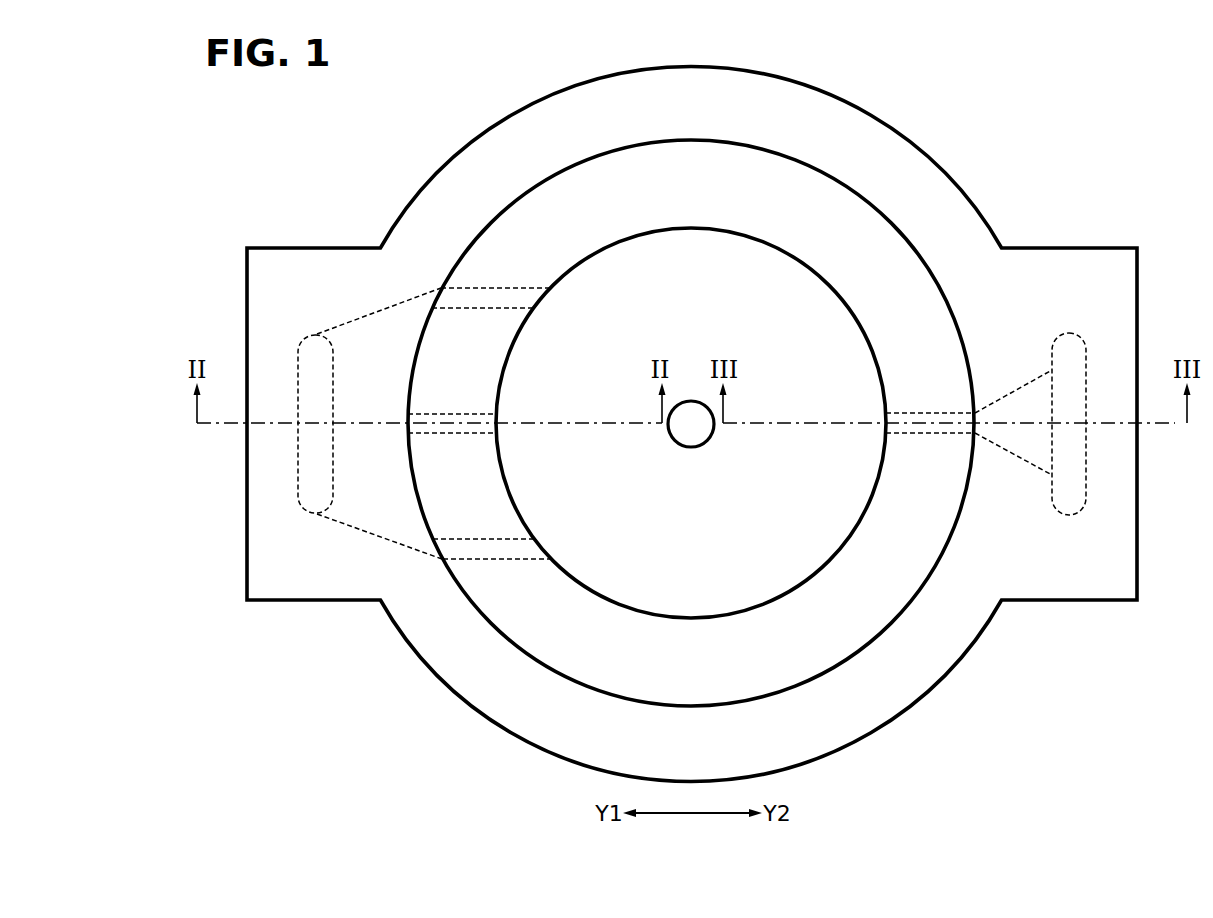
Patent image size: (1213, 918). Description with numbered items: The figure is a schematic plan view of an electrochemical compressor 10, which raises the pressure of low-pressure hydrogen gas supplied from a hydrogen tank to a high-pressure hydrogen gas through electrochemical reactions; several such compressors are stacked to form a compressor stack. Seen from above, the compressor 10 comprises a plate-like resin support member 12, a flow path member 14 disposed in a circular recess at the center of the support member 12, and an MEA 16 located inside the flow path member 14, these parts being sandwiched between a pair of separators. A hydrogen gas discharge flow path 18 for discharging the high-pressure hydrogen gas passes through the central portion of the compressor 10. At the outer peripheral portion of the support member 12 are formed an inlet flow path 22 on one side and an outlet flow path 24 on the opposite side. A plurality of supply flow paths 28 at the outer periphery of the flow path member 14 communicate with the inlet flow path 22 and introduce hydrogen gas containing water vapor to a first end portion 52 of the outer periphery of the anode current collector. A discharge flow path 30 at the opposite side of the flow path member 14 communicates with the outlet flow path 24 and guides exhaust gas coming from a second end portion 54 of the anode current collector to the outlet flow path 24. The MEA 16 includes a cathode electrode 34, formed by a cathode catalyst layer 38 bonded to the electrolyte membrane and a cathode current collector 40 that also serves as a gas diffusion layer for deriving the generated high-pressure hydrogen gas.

The electrochemical compressor 10 is at (285, 121).
The support member 12 is at (462, 144).
The flow path member 14 is at (641, 153).
The MEA 16 is at (585, 248).
The hydrogen gas discharge flow path 18 is at (671, 430).
The inlet flow path 22 is at (352, 340).
The outlet flow path 24 is at (1008, 408).
The supply flow paths 28 is at (450, 427).
The discharge flow path 30 is at (918, 430).
The cathode electrode 34 is at (1026, 650).
The cathode catalyst layer 38 is at (862, 638).
The cathode current collector 40 is at (838, 537).
The first end portion 52 is at (510, 430).
The second end portion 54 is at (877, 417).